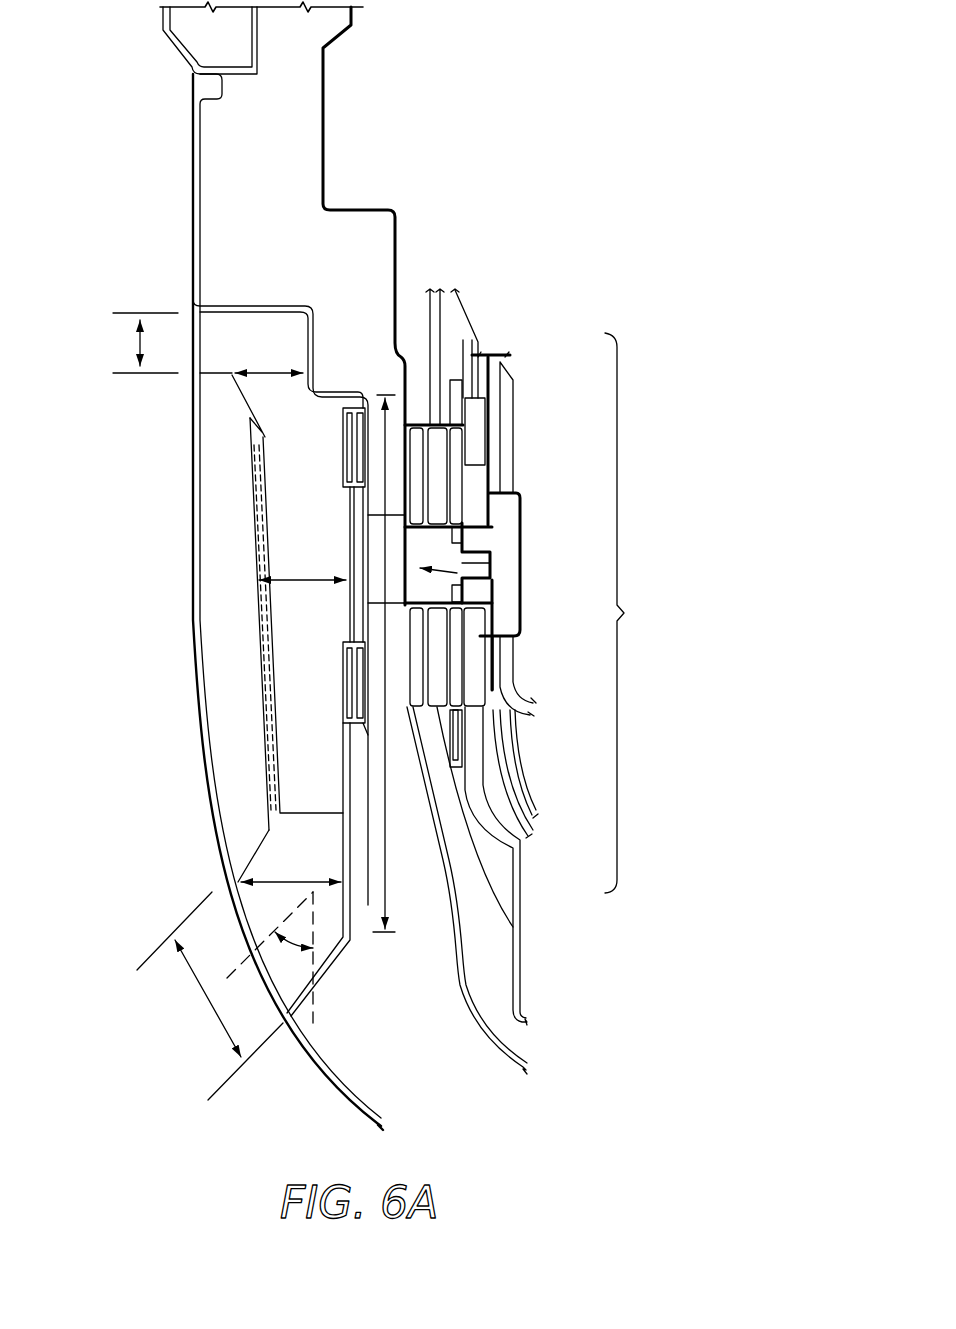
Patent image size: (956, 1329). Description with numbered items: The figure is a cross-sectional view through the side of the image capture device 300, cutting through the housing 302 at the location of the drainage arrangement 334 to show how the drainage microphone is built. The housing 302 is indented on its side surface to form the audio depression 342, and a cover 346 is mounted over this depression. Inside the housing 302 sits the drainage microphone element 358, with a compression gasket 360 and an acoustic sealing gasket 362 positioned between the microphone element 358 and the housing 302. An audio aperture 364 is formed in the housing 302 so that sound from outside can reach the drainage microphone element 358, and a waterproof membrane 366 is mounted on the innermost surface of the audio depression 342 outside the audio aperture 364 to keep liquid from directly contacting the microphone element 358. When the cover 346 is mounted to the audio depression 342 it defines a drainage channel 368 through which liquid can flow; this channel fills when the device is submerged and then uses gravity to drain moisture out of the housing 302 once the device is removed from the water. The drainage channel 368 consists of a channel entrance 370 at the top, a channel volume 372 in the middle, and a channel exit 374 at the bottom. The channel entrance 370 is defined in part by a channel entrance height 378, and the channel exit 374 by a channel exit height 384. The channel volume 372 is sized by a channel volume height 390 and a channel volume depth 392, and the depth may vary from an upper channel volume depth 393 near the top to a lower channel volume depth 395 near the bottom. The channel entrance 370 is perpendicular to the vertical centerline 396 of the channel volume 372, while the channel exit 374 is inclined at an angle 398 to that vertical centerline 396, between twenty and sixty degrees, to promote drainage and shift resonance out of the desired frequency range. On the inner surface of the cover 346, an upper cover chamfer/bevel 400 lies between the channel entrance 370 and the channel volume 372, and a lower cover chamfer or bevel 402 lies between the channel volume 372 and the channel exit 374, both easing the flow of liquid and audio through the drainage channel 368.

The image capture device 300 is at (512, 182).
The housing 302 is at (263, 195).
The drainage arrangement 334 is at (551, 591).
The audio depression 342 is at (270, 304).
The cover 346 is at (217, 673).
The drainage microphone element 358 is at (505, 566).
The compression gasket 360 is at (500, 497).
The acoustic sealing gasket 362 is at (437, 669).
The audio aperture 364 is at (463, 578).
The waterproof membrane 366 is at (362, 481).
The drainage channel 368 is at (309, 723).
The channel entrance 370 is at (246, 340).
The channel volume 372 is at (322, 617).
The channel exit 374 is at (288, 985).
The channel entrance height 378 is at (122, 343).
The channel exit height 384 is at (200, 993).
The channel volume height 390 is at (393, 862).
The channel volume depth 392 is at (297, 577).
The upper channel volume depth 393 is at (258, 375).
The lower channel volume depth 395 is at (264, 878).
The vertical centerline 396 is at (315, 937).
The angle 398 is at (315, 977).
The upper cover chamfer/bevel 400 is at (247, 397).
The lower cover chamfer or bevel 402 is at (259, 847).